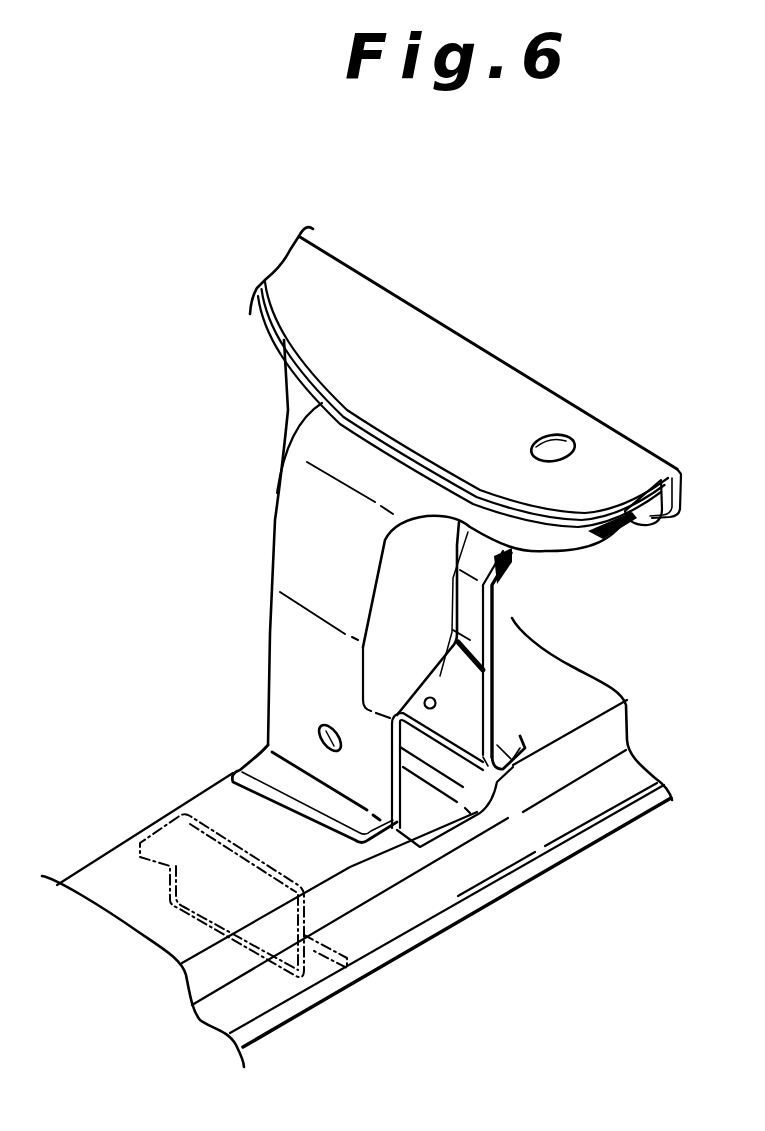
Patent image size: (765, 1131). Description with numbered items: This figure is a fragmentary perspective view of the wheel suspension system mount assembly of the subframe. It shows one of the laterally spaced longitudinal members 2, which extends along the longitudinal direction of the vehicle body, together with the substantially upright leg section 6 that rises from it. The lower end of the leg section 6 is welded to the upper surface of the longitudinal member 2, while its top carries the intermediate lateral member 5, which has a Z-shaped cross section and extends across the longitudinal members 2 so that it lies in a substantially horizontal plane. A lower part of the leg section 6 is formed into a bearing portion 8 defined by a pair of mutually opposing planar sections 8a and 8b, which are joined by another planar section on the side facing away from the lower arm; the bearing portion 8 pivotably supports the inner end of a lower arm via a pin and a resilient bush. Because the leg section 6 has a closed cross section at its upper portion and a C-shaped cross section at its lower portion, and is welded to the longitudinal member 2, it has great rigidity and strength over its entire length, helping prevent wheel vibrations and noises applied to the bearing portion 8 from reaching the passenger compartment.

The longitudinal member 2 is at (445, 893).
The intermediate lateral member 5 is at (397, 318).
The leg section 6 is at (243, 545).
The bearing portion 8 is at (100, 661).
The planar section 8a is at (452, 729).
The planar section 8b is at (290, 684).